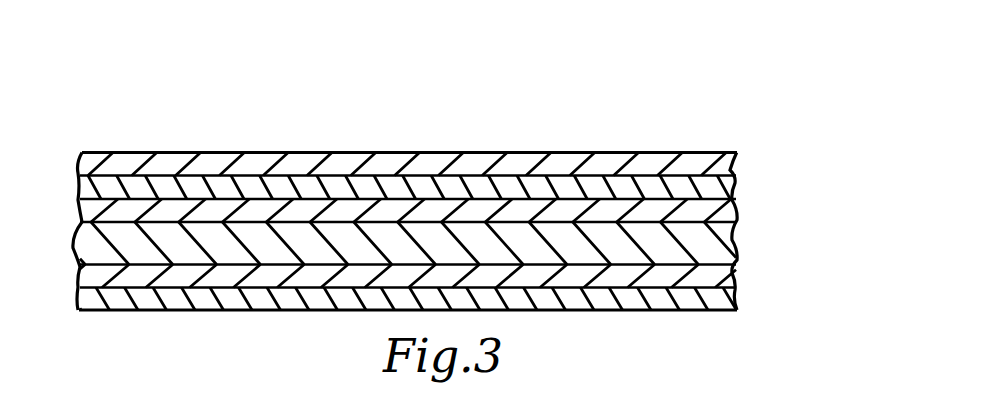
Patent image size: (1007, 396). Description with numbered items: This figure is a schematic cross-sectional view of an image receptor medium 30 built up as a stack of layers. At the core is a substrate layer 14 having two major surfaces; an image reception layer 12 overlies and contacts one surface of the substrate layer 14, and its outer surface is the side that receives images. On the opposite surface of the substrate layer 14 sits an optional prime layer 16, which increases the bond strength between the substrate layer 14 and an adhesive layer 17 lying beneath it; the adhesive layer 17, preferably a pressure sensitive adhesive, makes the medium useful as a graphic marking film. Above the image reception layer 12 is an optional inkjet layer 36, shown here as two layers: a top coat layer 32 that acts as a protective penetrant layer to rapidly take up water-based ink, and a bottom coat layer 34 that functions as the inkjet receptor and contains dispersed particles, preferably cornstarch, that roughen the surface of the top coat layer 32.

The image receptor medium 30 is at (630, 88).
The inkjet layer 36 is at (65, 157).
The top coat layer 32 is at (720, 155).
The bottom coat layer 34 is at (717, 189).
The image reception layer 12 is at (722, 203).
The substrate layer 14 is at (722, 228).
The prime layer 16 is at (725, 272).
The adhesive layer 17 is at (663, 300).